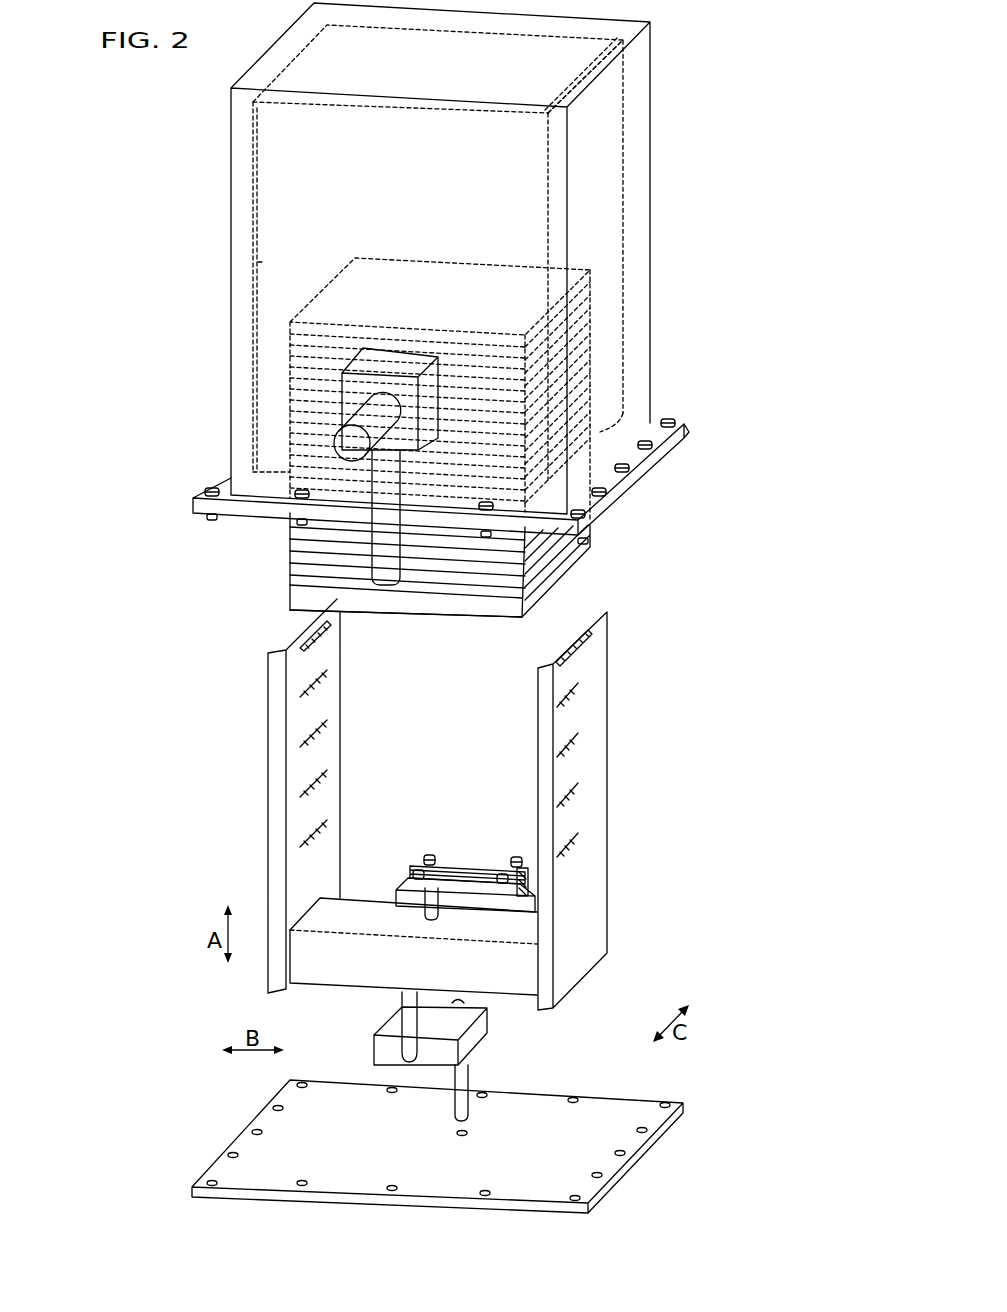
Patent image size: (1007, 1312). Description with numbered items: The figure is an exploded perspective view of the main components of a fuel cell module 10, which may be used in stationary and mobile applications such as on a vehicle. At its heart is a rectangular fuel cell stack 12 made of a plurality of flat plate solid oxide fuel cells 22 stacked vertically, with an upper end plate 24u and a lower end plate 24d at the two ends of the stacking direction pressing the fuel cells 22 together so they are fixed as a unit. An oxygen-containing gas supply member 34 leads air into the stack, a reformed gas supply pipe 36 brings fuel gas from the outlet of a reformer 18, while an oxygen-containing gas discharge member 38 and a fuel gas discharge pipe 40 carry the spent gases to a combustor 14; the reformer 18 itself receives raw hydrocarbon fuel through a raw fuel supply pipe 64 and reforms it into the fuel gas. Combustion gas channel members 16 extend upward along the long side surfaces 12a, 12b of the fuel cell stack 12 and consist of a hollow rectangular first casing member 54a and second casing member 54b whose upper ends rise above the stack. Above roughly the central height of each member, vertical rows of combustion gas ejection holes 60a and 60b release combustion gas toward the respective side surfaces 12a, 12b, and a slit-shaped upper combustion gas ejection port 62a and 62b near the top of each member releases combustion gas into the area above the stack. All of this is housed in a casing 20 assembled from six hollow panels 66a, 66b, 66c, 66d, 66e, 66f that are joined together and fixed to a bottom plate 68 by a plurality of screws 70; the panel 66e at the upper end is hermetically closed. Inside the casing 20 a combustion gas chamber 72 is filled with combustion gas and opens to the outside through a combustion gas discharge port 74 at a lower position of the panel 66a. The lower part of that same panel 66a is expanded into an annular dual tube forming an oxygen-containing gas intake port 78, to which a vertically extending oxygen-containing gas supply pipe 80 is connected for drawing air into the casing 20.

The fuel cell module 10 is at (150, 100).
The fuel cell stack 12 is at (443, 570).
The side surface 12a is at (290, 548).
The side surface 12b is at (553, 560).
The combustor 14 is at (337, 988).
The combustion gas channel members 16 is at (436, 820).
The reformer 18 is at (493, 1037).
The casing 20 is at (652, 66).
The fuel cells 22 is at (484, 405).
The upper end plate 24u is at (288, 330).
The lower end plate 24d is at (300, 598).
The oxygen-containing gas supply member 34 is at (470, 866).
The reformed gas supply pipe 36 is at (400, 1043).
The oxygen-containing gas discharge member 38 is at (400, 882).
The fuel gas discharge pipe 40 is at (440, 913).
The first casing member 54a is at (315, 796).
The second casing member 54b is at (583, 811).
The combustion gas ejection holes 60a is at (327, 719).
The combustion gas ejection holes 60b is at (580, 783).
The upper combustion gas ejection port 62a is at (323, 633).
The upper combustion gas ejection port 62b is at (554, 651).
The raw fuel supply pipe 64 is at (470, 1079).
The panel 66a is at (242, 190).
The panel 66b is at (640, 213).
The panel 66c is at (640, 137).
The panel 66d is at (242, 222).
The panel 66e is at (268, 62).
The panel 66f is at (660, 437).
The bottom plate 68 is at (652, 1147).
The screws 70 is at (668, 423).
The combustion gas chamber 72 is at (258, 265).
The combustion gas discharge port 74 is at (348, 444).
The oxygen-containing gas intake port 78 is at (394, 356).
The oxygen-containing gas supply pipe 80 is at (390, 575).